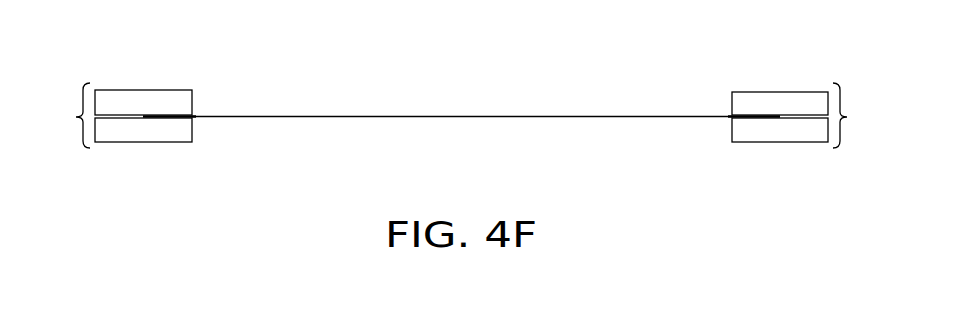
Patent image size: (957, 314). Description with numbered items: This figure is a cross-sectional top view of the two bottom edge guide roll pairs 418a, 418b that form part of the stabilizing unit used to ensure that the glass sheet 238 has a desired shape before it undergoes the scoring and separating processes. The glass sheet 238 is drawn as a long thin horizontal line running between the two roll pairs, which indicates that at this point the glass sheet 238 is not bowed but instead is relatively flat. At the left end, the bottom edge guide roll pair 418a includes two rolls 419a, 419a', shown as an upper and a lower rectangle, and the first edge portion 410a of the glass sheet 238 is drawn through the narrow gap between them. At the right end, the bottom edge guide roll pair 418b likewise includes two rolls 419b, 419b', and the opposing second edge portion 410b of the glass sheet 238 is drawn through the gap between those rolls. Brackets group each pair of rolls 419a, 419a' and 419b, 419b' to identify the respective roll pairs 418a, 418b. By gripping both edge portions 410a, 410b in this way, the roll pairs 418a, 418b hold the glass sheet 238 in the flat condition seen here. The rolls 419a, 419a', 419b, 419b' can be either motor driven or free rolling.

The bottom edge guide roll pair 418a is at (112, 117).
The roll 419a' is at (143, 85).
The roll 419a is at (143, 148).
The first edge portion 410a is at (203, 115).
The glass sheet 238 is at (462, 115).
The second edge portion 410b is at (722, 115).
The bottom edge guide roll pair 418b is at (813, 117).
The roll 419b' is at (780, 85).
The roll 419b is at (780, 148).